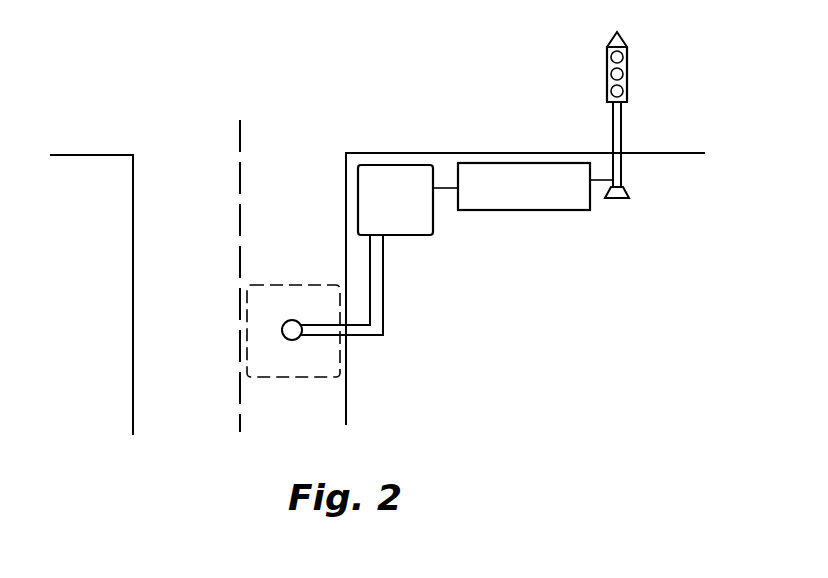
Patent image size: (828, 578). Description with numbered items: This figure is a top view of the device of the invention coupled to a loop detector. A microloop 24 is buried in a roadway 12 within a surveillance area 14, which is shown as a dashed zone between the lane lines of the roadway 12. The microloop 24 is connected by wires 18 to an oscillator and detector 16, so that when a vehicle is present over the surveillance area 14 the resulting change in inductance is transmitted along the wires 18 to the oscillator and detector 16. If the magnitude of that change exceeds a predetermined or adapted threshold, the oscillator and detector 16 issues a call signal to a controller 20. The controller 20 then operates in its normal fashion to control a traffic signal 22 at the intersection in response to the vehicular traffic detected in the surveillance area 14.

The roadway 12 is at (272, 422).
The surveillance area 14 is at (260, 283).
The oscillator and detector 16 is at (433, 236).
The wires 18 is at (385, 293).
The controller 20 is at (558, 211).
The traffic signal 22 is at (628, 79).
The microloop 24 is at (292, 341).